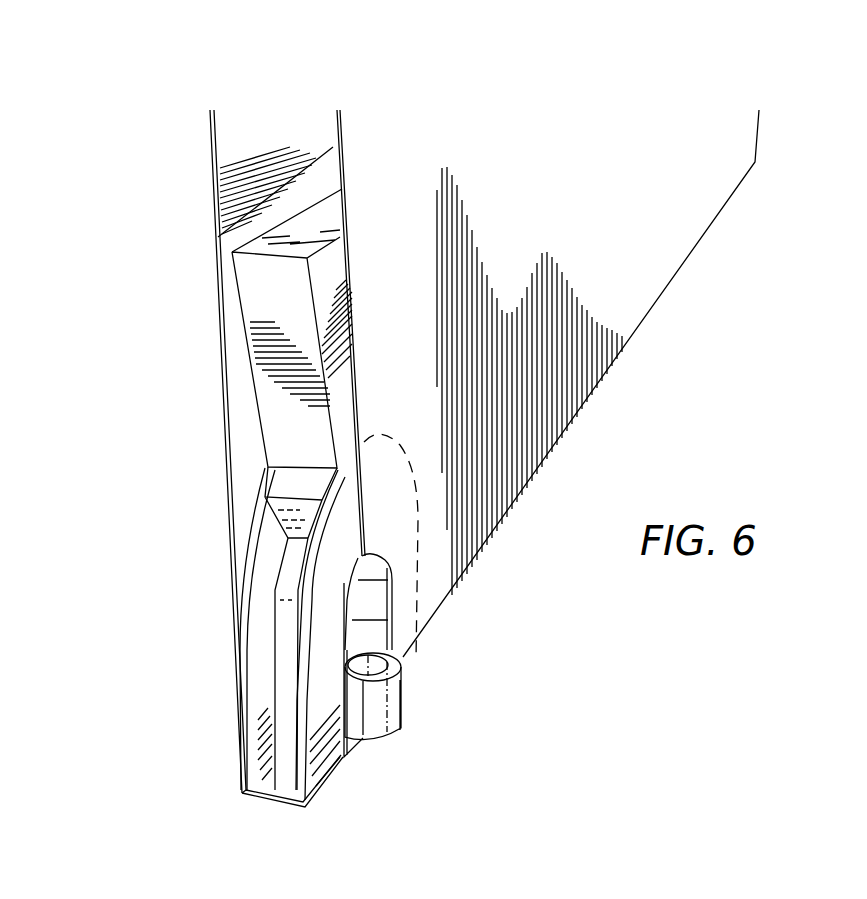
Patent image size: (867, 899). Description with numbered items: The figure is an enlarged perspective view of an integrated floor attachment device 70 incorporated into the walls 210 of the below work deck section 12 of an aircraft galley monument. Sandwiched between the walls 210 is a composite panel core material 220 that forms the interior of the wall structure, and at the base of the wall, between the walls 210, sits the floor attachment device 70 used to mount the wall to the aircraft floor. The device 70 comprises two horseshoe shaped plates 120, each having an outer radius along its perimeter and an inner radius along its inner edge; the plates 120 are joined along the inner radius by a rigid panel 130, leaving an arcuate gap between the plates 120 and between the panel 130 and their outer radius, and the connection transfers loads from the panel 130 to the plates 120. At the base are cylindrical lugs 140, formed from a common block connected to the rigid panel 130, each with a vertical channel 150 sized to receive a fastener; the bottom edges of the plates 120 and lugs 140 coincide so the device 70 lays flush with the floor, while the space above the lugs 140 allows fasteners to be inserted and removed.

The below work deck section 12 is at (687, 258).
The integrated floor attachment device 70 is at (338, 763).
The horseshoe shaped plates 120 is at (270, 736).
The rigid panel 130 is at (290, 596).
The lugs 140 is at (395, 703).
The vertical channel 150 is at (370, 637).
The walls 210 is at (340, 122).
The composite panel core material 220 is at (270, 388).